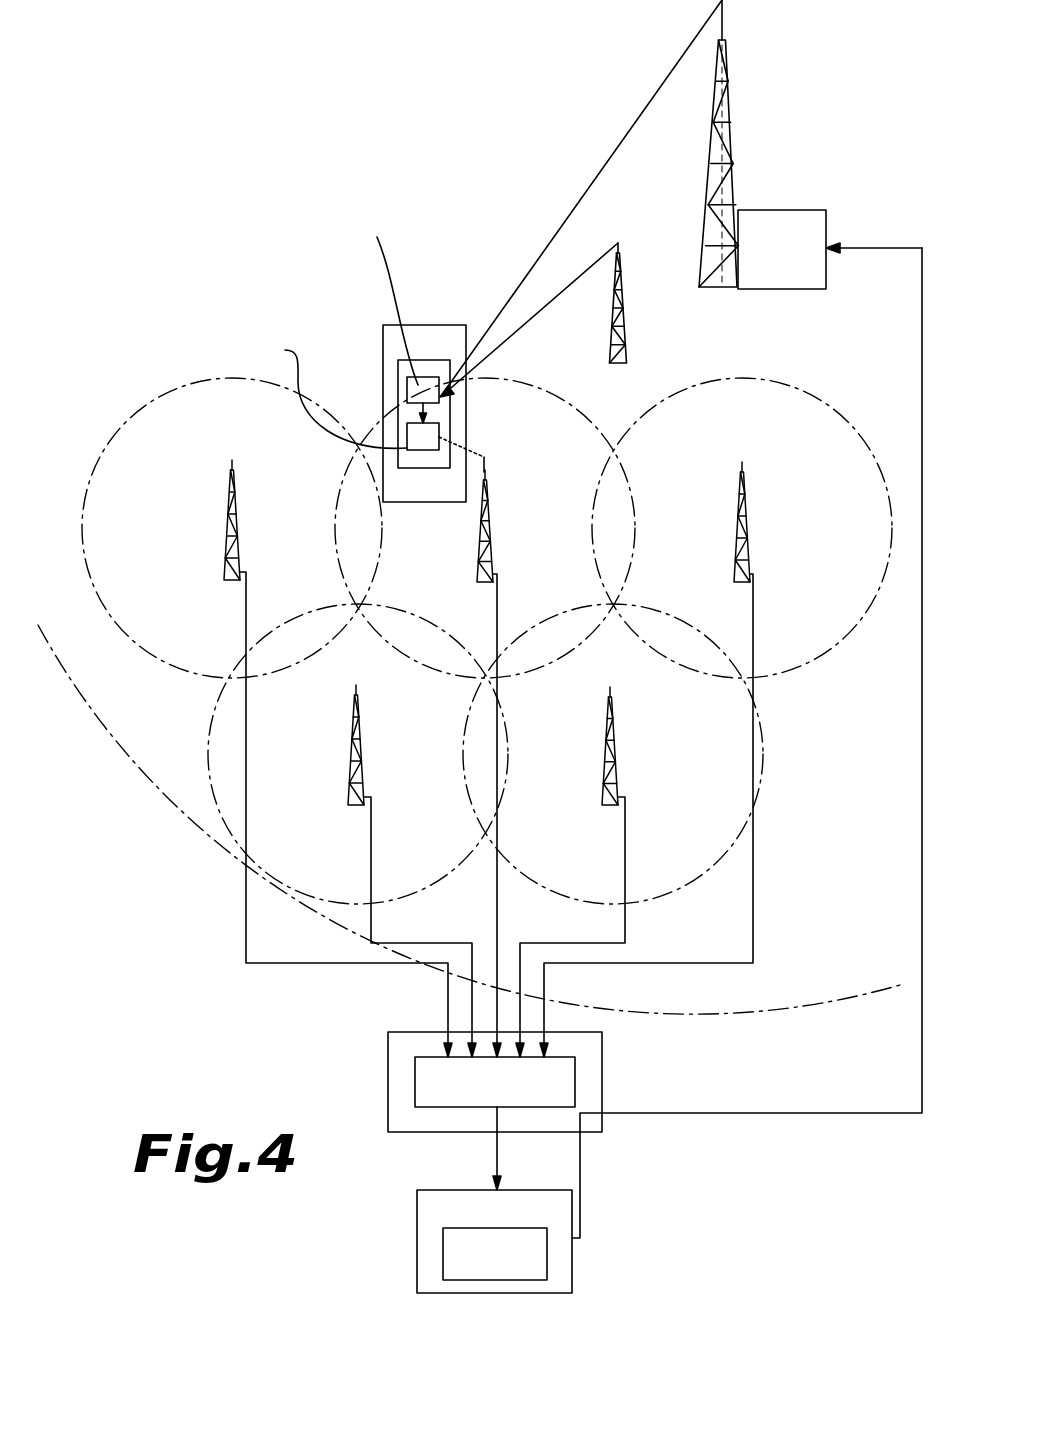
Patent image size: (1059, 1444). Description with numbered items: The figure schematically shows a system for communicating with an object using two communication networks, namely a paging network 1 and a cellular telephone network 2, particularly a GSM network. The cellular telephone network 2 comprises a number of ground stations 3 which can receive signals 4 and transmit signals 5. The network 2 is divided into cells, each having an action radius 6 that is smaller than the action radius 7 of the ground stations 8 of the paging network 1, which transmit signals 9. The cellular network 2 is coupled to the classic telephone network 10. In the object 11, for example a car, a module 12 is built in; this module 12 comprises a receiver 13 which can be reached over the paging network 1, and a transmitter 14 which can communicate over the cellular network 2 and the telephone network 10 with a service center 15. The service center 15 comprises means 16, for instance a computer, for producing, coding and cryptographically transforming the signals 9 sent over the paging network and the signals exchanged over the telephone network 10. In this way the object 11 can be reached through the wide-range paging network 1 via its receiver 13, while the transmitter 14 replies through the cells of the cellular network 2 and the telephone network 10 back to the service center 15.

The paging network 1 is at (764, 99).
The cellular telephone network 2 is at (487, 637).
The ground stations 3 is at (224, 536).
The signals 4 is at (342, 371).
The signals 5 is at (470, 460).
The action radius 6 is at (638, 426).
The action radius 7 is at (130, 755).
The ground stations 8 is at (786, 163).
The signals 9 is at (623, 135).
The classic telephone network 10 is at (497, 1155).
The object 11 is at (307, 337).
The module 12 is at (417, 377).
The receiver 13 is at (407, 384).
The transmitter 14 is at (407, 432).
The service center 15 is at (506, 1241).
The means 16 is at (547, 1270).